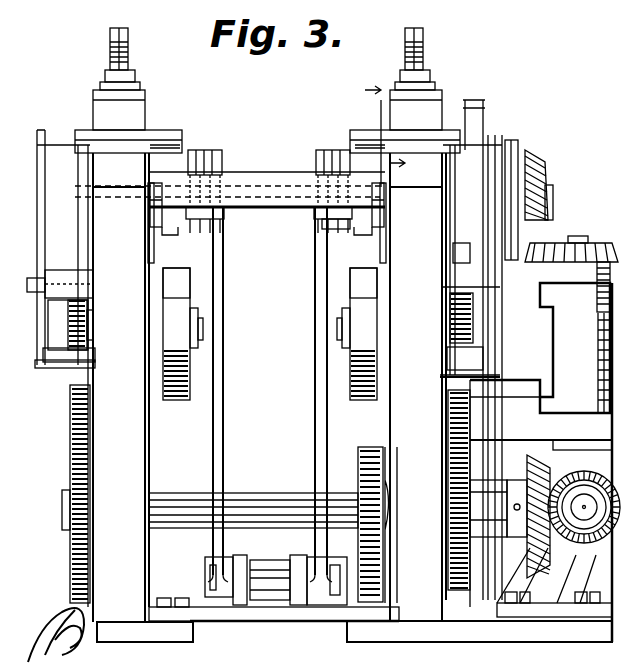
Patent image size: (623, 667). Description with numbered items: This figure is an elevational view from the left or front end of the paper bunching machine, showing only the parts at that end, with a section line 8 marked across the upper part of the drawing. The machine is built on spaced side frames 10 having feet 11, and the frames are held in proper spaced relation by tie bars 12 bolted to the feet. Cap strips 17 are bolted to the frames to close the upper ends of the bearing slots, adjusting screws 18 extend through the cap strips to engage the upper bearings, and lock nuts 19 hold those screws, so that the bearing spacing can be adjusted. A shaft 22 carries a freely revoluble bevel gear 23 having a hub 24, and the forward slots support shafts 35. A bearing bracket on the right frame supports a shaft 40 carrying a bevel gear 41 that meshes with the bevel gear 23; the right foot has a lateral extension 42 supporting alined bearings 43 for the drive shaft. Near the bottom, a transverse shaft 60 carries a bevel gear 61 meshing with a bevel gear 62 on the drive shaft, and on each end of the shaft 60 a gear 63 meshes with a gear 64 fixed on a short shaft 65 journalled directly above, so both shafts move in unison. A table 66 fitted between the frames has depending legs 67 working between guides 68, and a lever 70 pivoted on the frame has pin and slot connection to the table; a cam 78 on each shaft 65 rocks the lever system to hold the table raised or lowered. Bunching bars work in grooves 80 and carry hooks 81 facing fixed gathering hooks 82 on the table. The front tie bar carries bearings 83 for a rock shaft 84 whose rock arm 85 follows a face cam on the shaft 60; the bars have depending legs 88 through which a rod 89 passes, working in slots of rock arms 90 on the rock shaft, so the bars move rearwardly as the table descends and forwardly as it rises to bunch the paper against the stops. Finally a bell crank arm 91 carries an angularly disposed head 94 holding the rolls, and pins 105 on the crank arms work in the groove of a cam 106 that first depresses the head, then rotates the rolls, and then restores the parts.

The section line 8- 8 is at (392, 126).
The side frame 10 is at (145, 451).
The foot 11 is at (205, 643).
The tie bar 12 is at (258, 618).
The cap strip 17 is at (93, 96).
The adjusting screw 18 is at (128, 34).
The lock nut 19 is at (135, 73).
The shaft 22 is at (553, 195).
The bevel gear 23 is at (546, 164).
The hub 24 is at (511, 185).
The shaft 35 is at (541, 493).
The shaft 40 is at (580, 236).
The bevel gear 41 is at (606, 243).
The lateral extension 42 is at (545, 645).
The bearing 43 is at (510, 582).
The transverse shaft 60 is at (283, 480).
The bevel gear 61 is at (527, 468).
The bevel gear 62 is at (565, 555).
The gear 63 is at (70, 465).
The gear 64 is at (93, 327).
The short shaft 65 is at (337, 332).
The table 66 is at (290, 163).
The depending leg 67 is at (178, 235).
The guide 68 is at (154, 255).
The lever 70 is at (150, 203).
The cam 78 is at (350, 284).
The groove 80 is at (205, 188).
The hook 81 is at (200, 152).
The fixed gathering hook 82 is at (212, 160).
The bearing 83 is at (240, 558).
The rock shaft 84 is at (205, 575).
The rock arm 85 is at (340, 588).
The depending leg 88 is at (325, 225).
The rod 89 is at (223, 218).
The rock arm 90 is at (315, 438).
The arm 91 is at (76, 193).
The elongated head 94 is at (135, 140).
The pin 105 is at (483, 317).
The cam 106 is at (52, 340).